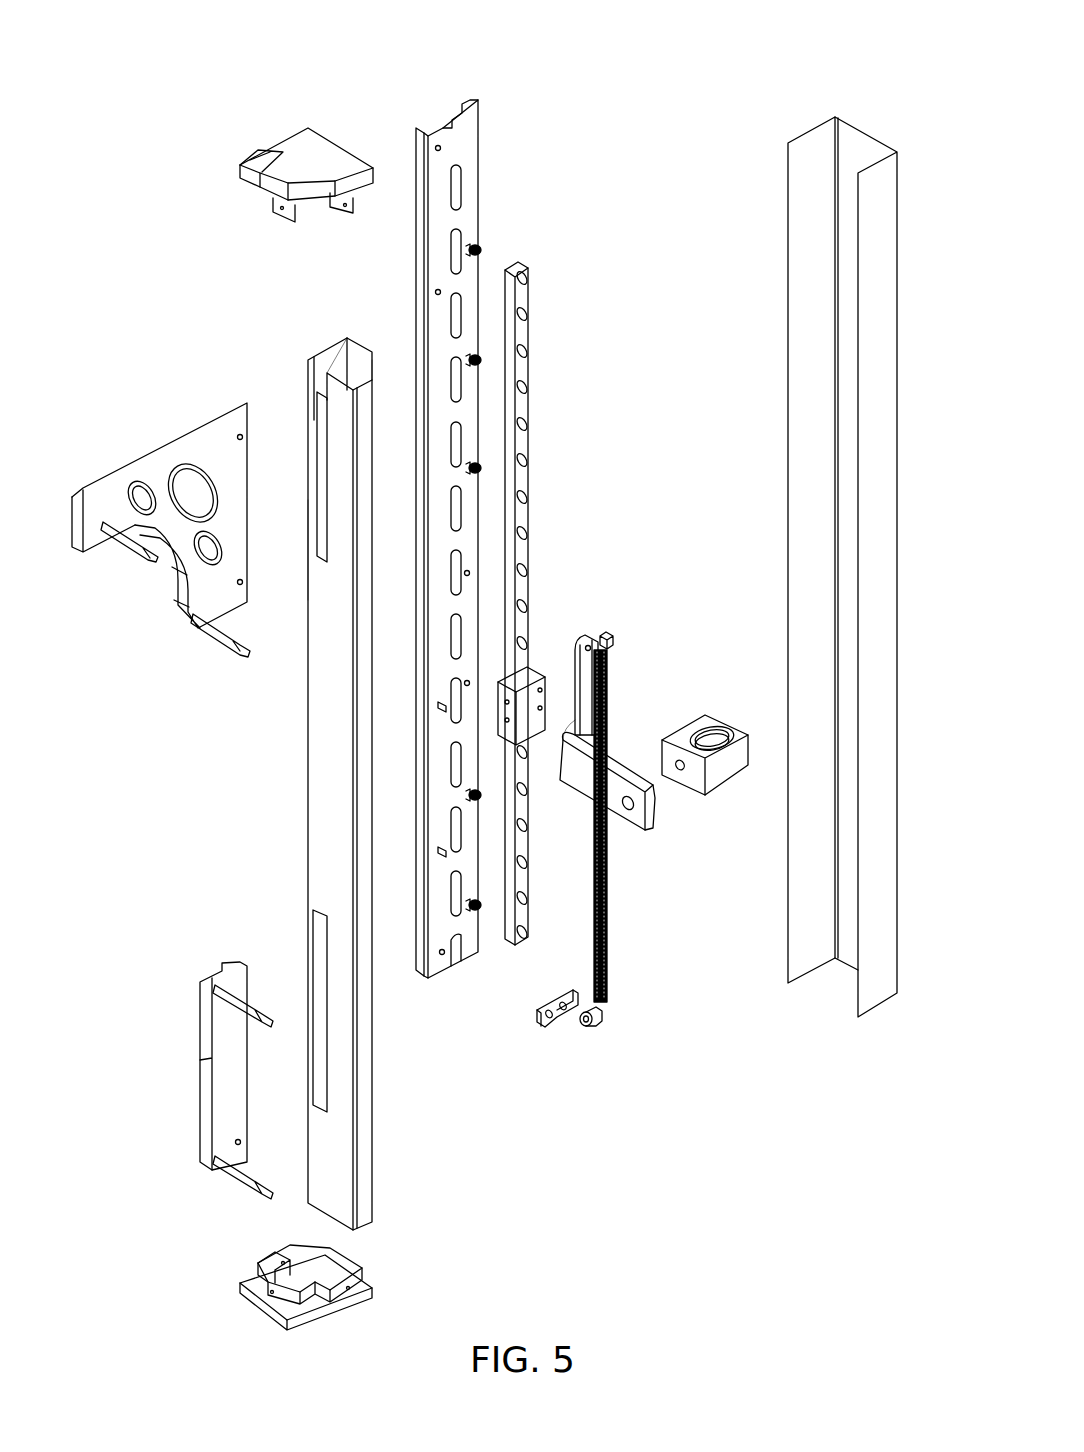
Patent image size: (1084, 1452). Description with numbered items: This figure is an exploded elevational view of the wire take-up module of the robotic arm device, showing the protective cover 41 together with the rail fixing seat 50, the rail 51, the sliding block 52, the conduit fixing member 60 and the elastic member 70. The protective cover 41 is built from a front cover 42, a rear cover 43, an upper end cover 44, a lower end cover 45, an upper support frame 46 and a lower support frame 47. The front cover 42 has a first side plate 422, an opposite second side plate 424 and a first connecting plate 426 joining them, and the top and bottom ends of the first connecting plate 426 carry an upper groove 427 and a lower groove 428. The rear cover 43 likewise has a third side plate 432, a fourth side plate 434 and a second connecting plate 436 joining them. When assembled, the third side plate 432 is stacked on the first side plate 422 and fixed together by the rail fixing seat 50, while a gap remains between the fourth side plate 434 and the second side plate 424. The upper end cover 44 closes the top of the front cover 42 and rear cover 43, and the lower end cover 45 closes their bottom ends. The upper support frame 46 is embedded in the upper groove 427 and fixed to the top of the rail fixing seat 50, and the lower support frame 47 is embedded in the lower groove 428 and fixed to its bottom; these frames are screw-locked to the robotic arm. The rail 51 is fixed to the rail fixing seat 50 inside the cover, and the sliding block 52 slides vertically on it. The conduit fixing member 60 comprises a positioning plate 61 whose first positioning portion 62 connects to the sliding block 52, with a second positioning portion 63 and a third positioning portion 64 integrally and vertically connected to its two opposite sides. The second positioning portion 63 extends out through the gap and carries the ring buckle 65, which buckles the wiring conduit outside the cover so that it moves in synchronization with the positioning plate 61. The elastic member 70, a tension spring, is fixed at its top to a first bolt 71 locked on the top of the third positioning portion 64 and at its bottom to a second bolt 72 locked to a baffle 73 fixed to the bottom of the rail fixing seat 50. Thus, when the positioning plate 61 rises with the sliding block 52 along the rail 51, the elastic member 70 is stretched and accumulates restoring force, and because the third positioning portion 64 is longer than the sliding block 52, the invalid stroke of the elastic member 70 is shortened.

The protective cover 41 is at (212, 774).
The front cover 42 is at (299, 736).
The first side plate 422 is at (325, 357).
The second side plate 424 is at (372, 393).
The first connecting plate 426 is at (342, 398).
The upper groove 427 is at (318, 543).
The lower groove 428 is at (322, 938).
The rear cover 43 is at (850, 509).
The third side plate 432 is at (808, 153).
The fourth side plate 434 is at (883, 536).
The second connecting plate 436 is at (852, 153).
The upper end cover 44 is at (297, 148).
The lower end cover 45 is at (313, 1308).
The upper support frame 46 is at (175, 457).
The lower support frame 47 is at (230, 1090).
The rail fixing seat 50 is at (468, 153).
The rail 51 is at (523, 335).
The sliding block 52 is at (535, 690).
The conduit fixing member 60 is at (667, 689).
The positioning plate 61 is at (641, 718).
The first positioning portion 62 is at (588, 722).
The second positioning portion 63 is at (612, 783).
The third positioning portion 64 is at (563, 728).
The ring buckle 65 is at (736, 712).
The elastic member 70 is at (610, 895).
The first bolt 71 is at (607, 630).
The second bolt 72 is at (590, 1024).
The baffle 73 is at (560, 1020).